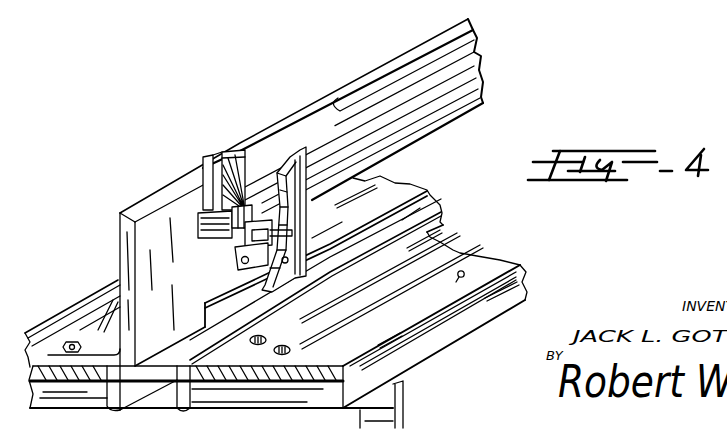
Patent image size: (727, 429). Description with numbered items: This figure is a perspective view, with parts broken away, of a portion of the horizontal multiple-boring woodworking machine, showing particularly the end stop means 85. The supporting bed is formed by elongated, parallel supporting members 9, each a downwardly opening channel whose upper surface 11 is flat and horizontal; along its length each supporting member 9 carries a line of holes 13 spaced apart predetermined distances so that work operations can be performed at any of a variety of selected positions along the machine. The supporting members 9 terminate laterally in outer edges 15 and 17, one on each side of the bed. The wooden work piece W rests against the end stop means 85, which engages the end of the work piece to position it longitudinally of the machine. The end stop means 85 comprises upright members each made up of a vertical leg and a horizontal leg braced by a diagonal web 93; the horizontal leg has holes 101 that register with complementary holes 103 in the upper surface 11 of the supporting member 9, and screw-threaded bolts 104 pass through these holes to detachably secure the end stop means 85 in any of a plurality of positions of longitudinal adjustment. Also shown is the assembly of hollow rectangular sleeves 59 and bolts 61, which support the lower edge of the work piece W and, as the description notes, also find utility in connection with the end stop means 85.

The work piece W is at (478, 50).
The end stop means 85 is at (163, 200).
The supporting member 9 is at (518, 285).
The outer edge 15 is at (433, 347).
The upper surface 11 is at (477, 253).
The holes 13 is at (456, 282).
The holes 103 is at (265, 338).
The bolts 61 is at (308, 228).
The sleeves 59 is at (236, 254).
The outer edge 17 is at (72, 318).
The holes 101 is at (80, 346).
The bolts 104 is at (64, 347).
The diagonal web 93 is at (108, 306).